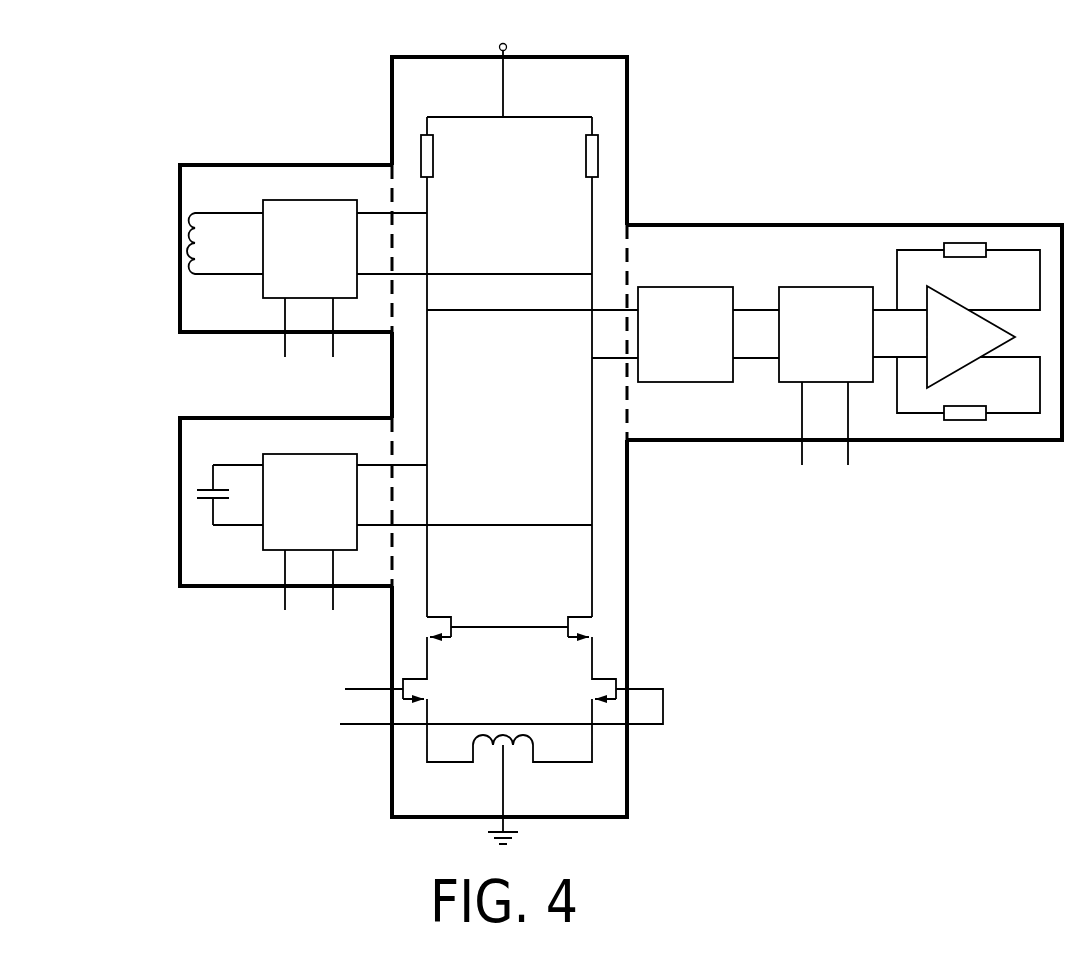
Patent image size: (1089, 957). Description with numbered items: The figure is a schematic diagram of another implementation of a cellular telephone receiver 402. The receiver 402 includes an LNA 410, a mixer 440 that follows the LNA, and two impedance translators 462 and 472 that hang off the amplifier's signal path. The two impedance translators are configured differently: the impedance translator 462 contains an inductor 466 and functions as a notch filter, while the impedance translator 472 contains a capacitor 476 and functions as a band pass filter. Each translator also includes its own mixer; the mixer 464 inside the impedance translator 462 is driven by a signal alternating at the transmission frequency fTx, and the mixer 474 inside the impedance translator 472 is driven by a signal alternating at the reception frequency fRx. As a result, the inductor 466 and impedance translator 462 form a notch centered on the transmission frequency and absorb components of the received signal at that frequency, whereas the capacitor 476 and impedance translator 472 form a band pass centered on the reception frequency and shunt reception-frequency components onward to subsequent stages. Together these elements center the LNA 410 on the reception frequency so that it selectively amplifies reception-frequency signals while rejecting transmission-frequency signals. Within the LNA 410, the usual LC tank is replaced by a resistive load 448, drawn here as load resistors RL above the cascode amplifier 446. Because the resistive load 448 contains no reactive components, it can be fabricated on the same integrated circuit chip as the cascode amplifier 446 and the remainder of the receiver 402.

The receiver 402 is at (841, 111).
The LNA 410 is at (632, 91).
The resistive load 448 is at (605, 138).
The cascode amplifier 446 is at (613, 776).
The mixer 440 is at (881, 212).
The impedance translator 462 is at (386, 155).
The inductor 466 is at (211, 312).
The mixer 464 is at (263, 298).
The impedance translator 472 is at (206, 410).
The mixer 474 is at (263, 550).
The capacitor 476 is at (205, 518).